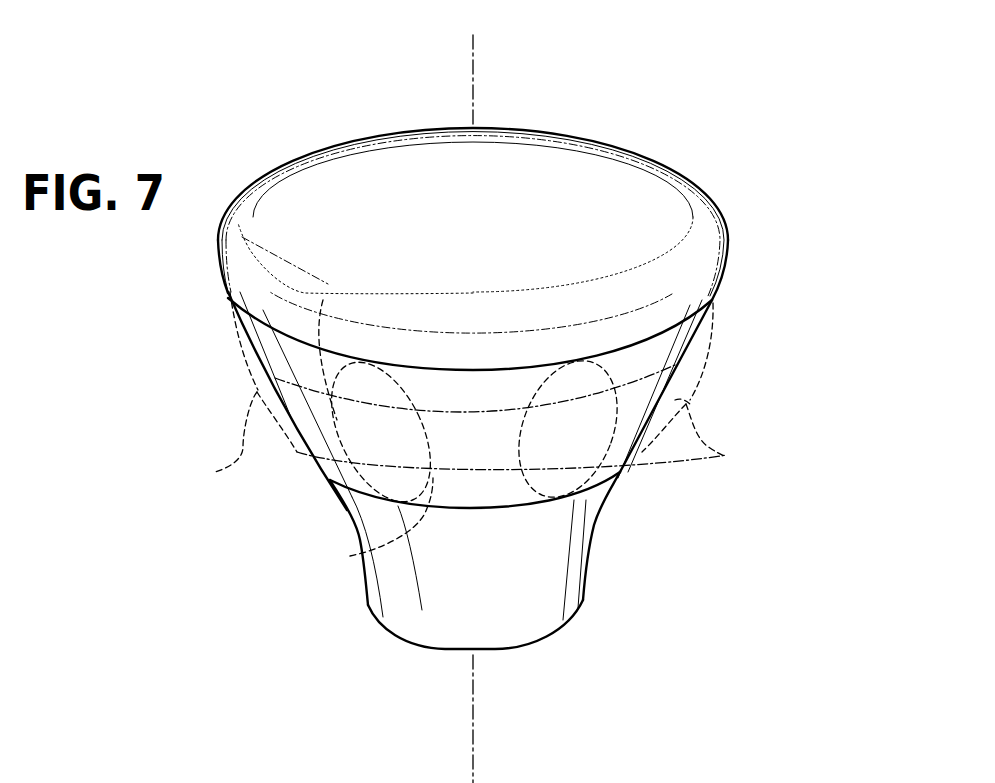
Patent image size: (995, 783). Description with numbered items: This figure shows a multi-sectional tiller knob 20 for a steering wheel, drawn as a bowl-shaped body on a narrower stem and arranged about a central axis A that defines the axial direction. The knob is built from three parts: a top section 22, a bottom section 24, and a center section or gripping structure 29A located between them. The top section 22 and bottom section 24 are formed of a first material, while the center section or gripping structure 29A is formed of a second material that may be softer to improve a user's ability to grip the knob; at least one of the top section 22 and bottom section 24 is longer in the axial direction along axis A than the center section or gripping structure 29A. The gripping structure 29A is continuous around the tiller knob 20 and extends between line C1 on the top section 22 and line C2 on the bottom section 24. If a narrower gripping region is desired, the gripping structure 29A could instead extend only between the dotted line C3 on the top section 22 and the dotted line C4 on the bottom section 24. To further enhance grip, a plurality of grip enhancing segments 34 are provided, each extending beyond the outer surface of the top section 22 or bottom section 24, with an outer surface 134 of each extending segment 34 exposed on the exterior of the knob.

The axis A is at (475, 76).
The tiller knob 20 is at (526, 374).
The top section 22 is at (410, 153).
The center section or gripping structure 29A is at (752, 280).
The bottom section 24 is at (550, 575).
The grip enhancing segment 34 is at (333, 489).
The outer surface of extending segment 134 is at (583, 444).
The line C1 is at (323, 300).
The line C2 is at (520, 507).
The dotted line C3 is at (493, 412).
The dotted line C4 is at (352, 556).